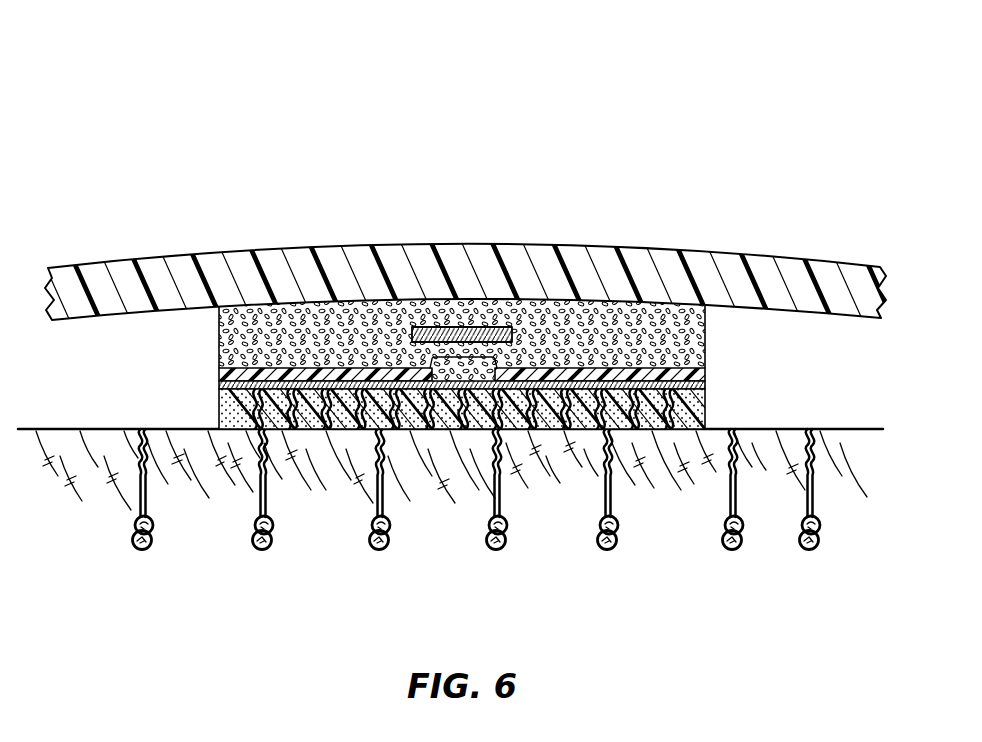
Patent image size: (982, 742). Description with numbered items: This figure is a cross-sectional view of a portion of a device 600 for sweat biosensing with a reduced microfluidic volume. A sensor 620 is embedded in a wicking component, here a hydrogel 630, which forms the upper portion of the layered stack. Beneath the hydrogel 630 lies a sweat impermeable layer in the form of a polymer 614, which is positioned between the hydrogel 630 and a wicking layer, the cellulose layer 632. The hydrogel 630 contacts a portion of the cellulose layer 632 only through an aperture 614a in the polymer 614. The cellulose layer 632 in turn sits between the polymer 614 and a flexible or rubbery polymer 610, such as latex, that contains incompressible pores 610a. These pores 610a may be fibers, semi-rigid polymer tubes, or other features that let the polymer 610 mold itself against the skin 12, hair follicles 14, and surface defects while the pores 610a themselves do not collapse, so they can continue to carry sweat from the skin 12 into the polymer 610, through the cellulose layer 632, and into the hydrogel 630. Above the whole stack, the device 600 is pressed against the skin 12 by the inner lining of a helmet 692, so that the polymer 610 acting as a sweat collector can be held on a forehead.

The device 600 is at (146, 143).
The helmet 692 is at (118, 264).
The aperture 614a is at (460, 355).
The sensor 620 is at (499, 326).
The polymer 614 is at (647, 374).
The hydrogel 630 is at (219, 345).
The cellulose layer 632 is at (678, 385).
The polymer 610 is at (219, 398).
The incompressible pores 610a is at (663, 405).
The skin 12 is at (640, 487).
The hair follicles 14 is at (153, 539).